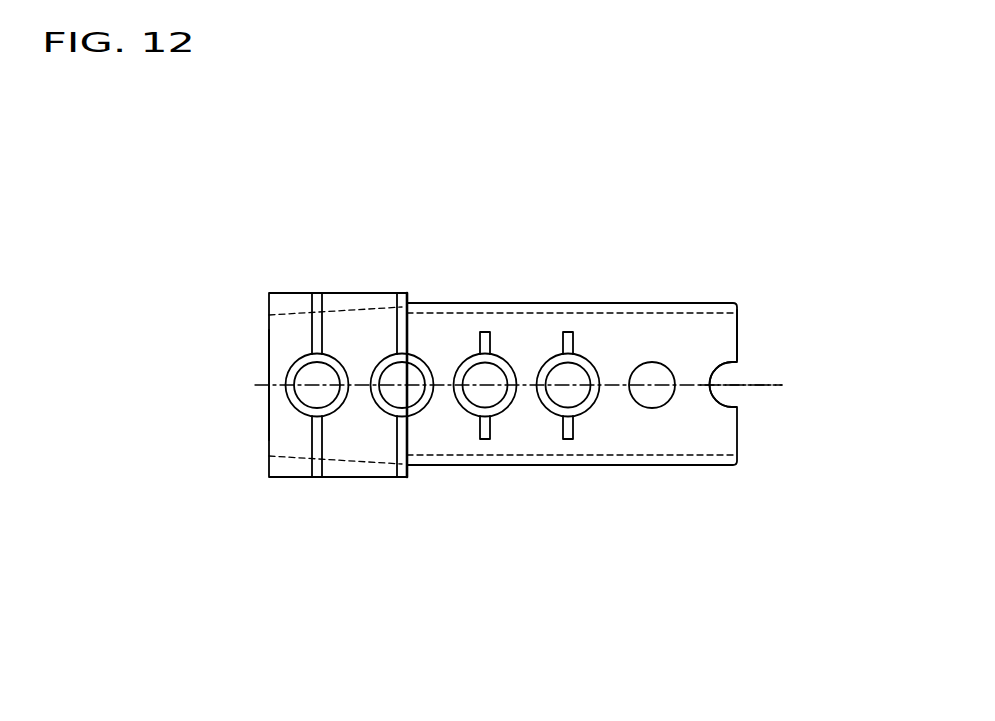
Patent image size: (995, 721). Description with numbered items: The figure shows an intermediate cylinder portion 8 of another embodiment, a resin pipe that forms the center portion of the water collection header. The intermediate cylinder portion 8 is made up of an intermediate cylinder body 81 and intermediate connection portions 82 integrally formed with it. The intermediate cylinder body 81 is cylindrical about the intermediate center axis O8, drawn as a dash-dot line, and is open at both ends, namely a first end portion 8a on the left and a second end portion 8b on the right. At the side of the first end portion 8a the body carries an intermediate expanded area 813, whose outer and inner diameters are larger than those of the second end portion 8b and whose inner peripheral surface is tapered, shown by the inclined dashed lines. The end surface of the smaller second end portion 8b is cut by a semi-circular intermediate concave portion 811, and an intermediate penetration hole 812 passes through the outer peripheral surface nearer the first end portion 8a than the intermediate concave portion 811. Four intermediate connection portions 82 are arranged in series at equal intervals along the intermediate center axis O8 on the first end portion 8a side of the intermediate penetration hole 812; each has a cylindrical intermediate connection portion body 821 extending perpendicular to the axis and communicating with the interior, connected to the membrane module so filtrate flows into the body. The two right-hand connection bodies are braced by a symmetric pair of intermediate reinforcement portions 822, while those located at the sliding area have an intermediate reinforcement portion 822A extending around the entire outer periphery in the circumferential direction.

The intermediate cylinder portion 8 is at (675, 208).
The intermediate cylinder body 81 is at (707, 303).
The intermediate concave portion 811 is at (734, 392).
The intermediate penetration hole 812 is at (643, 399).
The intermediate expanded area 813 is at (278, 293).
The first end portion 8a is at (269, 355).
The second end portion 8b is at (738, 340).
The intermediate center axis O8 is at (763, 384).
The intermediate connection portion 82 is at (294, 403).
The intermediate connection portion body 821 is at (303, 362).
The intermediate reinforcement portion 822 is at (486, 341).
The intermediate reinforcement portion 822A is at (318, 342).